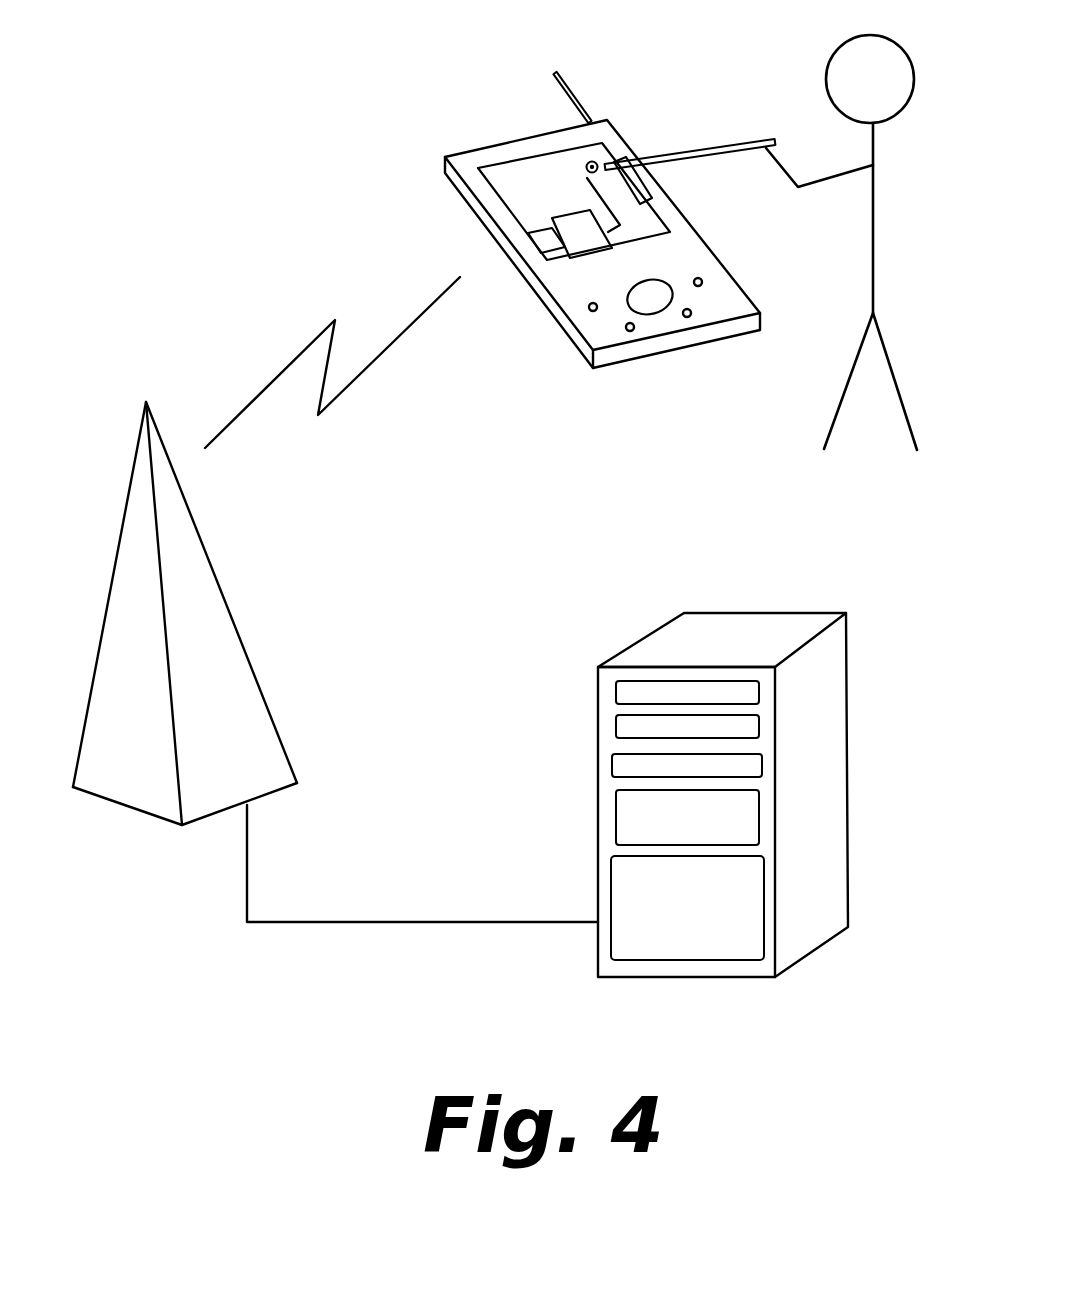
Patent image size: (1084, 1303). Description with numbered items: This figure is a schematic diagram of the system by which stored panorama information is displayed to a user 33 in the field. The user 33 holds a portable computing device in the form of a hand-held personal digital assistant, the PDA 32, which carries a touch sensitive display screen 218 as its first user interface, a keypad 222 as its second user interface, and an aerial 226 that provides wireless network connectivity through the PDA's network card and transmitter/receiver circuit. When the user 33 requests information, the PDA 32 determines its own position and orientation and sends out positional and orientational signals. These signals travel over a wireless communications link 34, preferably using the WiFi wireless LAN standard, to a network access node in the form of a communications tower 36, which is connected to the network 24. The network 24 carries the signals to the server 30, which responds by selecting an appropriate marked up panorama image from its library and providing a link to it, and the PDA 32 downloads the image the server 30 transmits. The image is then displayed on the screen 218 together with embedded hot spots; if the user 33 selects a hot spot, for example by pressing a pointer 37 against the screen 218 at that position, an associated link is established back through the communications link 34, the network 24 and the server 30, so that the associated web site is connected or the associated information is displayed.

The network 24 is at (433, 922).
The server 30 is at (717, 635).
The personal digital assistant (PDA) 32 is at (729, 301).
The user 33 is at (874, 210).
The wireless communications link 34 is at (402, 332).
The communications tower 36 is at (253, 727).
The pointer 37 is at (693, 157).
The touch sensitive display screen 218 is at (545, 180).
The keypad 222 is at (652, 307).
The aerial 226 is at (572, 93).